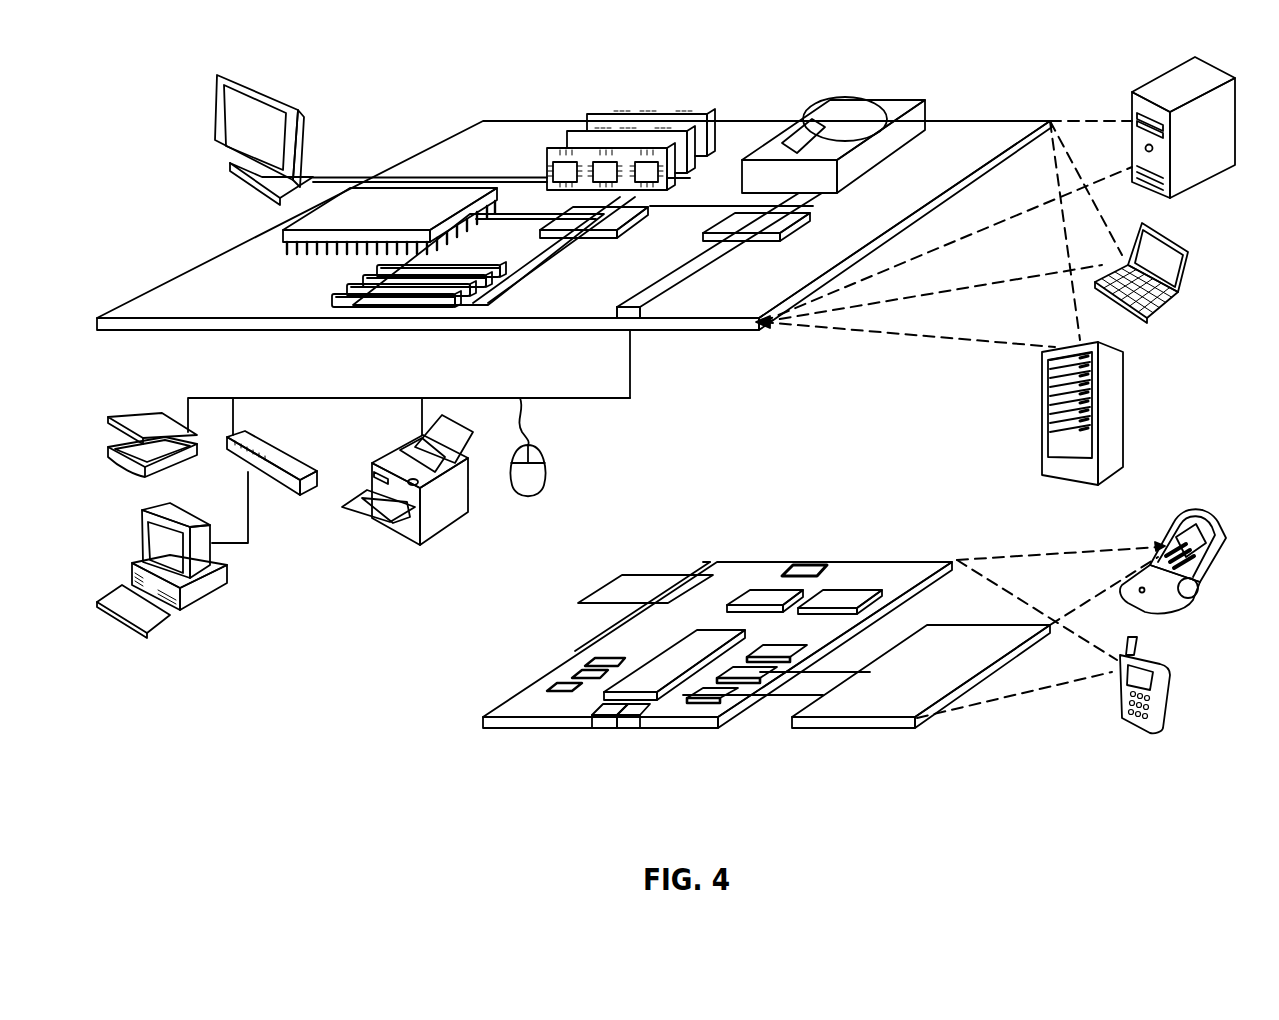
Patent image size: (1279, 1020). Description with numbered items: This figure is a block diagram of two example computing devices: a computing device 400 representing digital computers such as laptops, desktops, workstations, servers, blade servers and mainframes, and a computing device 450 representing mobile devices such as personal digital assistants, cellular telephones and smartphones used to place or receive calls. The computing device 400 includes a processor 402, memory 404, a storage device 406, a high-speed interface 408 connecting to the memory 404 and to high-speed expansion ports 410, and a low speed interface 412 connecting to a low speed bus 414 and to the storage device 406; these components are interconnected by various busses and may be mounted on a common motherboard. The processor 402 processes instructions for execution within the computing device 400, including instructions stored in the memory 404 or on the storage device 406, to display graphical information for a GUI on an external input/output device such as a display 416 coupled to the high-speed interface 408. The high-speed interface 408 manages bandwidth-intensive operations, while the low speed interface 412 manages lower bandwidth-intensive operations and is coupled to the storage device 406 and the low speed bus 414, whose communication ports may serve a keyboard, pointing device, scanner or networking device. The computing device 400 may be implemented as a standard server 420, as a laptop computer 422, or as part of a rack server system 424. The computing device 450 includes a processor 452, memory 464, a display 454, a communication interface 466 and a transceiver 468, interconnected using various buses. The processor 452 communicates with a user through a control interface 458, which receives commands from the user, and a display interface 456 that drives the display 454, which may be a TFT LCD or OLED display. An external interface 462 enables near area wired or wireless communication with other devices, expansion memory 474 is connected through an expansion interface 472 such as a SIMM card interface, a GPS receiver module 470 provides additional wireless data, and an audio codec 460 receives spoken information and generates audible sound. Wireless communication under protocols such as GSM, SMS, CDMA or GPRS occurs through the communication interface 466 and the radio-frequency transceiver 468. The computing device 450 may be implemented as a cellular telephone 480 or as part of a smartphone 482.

The computing device 400 is at (410, 86).
The processor 402 is at (283, 236).
The memory 404 is at (598, 113).
The storage device 406 is at (826, 102).
The high-speed interface 408 is at (572, 213).
The high-speed expansion ports 410 is at (348, 294).
The low speed interface 412 is at (741, 221).
The low speed bus 414 is at (642, 319).
The display 416 is at (218, 73).
The standard server 420 is at (1132, 107).
The laptop computer 422 is at (1189, 252).
The rack server system 424 is at (1042, 437).
The computing device 450 is at (458, 726).
The processor 452 is at (652, 687).
The display 454 is at (883, 703).
The display interface 456 is at (727, 700).
The control interface 458 is at (762, 680).
The audio codec 460 is at (776, 657).
The external interface 462 is at (617, 715).
The memory 464 is at (553, 684).
The communication interface 466 is at (768, 597).
The transceiver 468 is at (841, 597).
The GPS receiver module 470 is at (816, 565).
The expansion interface 472 is at (702, 574).
The expansion memory 474 is at (624, 578).
The cellular telephone 480 is at (1177, 518).
The smartphone 482 is at (1120, 684).